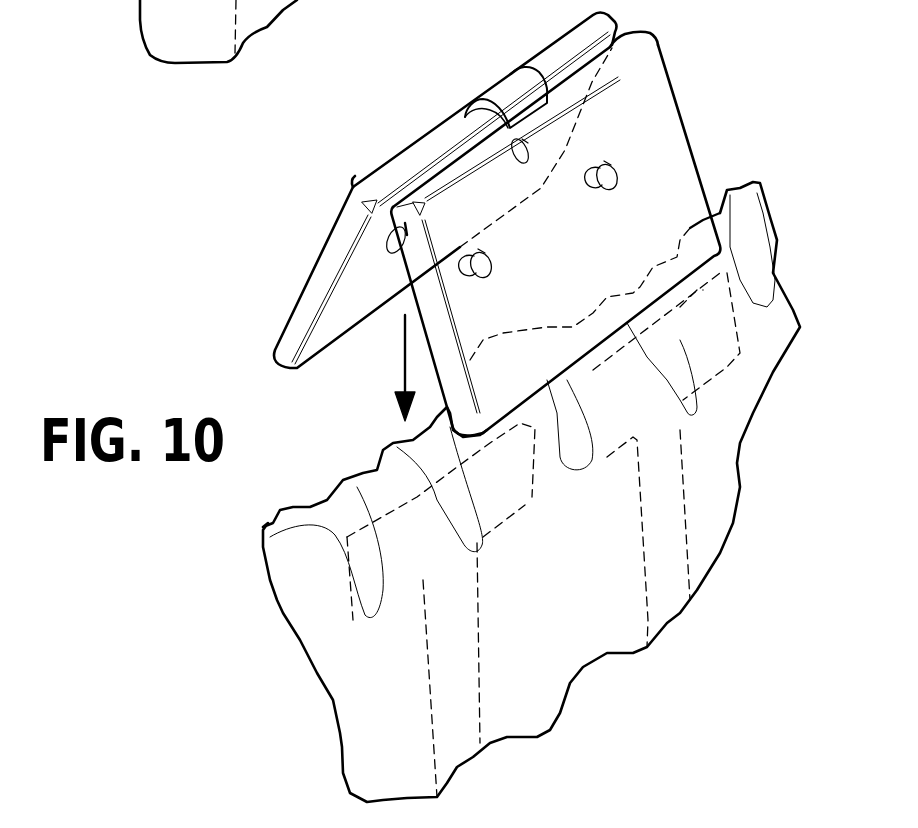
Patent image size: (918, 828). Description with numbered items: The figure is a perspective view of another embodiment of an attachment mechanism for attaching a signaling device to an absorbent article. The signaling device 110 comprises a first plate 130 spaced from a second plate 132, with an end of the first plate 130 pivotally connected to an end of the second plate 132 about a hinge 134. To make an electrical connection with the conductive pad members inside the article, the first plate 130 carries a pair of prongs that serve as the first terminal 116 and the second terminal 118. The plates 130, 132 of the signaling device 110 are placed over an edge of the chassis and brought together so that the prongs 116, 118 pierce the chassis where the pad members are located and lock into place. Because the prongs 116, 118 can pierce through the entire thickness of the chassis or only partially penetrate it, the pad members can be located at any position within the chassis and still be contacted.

The signaling device 110 is at (627, 93).
The first terminal 116 is at (483, 250).
The second terminal 118 is at (608, 157).
The first plate 130 is at (656, 40).
The second plate 132 is at (425, 152).
The hinge 134 is at (514, 88).